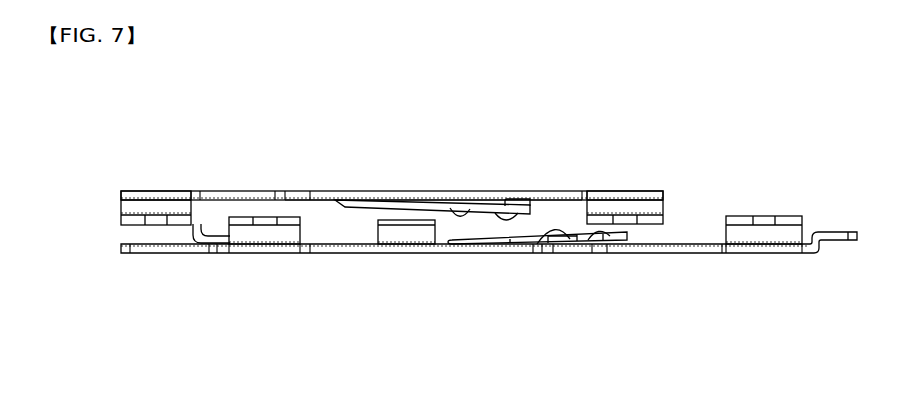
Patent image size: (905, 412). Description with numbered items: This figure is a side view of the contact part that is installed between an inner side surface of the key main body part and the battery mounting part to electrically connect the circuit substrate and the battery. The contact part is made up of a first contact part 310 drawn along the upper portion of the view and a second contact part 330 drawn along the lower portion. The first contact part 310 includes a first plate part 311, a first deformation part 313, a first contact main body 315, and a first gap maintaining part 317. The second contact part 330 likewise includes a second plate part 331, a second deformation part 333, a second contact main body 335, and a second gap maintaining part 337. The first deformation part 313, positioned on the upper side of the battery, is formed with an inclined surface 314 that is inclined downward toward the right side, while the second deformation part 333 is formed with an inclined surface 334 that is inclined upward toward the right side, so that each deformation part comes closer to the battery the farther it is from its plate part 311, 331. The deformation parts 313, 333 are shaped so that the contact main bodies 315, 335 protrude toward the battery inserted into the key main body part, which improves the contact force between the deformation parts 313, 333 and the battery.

The first contact part 310 is at (637, 189).
The first plate part 311 is at (233, 191).
The first deformation part 313 is at (496, 200).
The inclined surface 314 is at (447, 191).
The first contact main body 315 is at (540, 222).
The first gap maintaining part 317 is at (370, 191).
The second contact part 330 is at (349, 255).
The second plate part 331 is at (410, 253).
The second deformation part 333 is at (586, 244).
The inclined surface 334 is at (535, 245).
The second contact main body 335 is at (630, 232).
The second gap maintaining part 337 is at (603, 245).